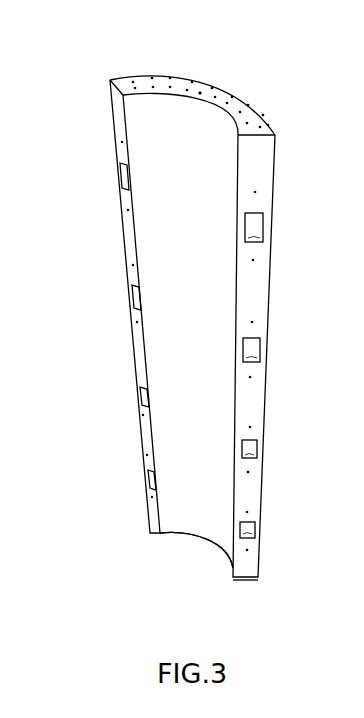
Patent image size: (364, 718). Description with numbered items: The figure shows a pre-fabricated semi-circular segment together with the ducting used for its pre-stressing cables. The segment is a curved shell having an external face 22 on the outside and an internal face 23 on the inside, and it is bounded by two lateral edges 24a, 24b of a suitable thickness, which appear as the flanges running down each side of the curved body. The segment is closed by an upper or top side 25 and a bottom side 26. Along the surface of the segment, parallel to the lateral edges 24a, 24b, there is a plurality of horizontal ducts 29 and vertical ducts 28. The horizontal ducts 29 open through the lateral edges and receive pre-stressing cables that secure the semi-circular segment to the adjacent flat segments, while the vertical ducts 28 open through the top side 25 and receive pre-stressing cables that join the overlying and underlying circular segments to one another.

The external face 22 is at (268, 110).
The internal face 23 is at (167, 128).
The lateral edge 24a is at (250, 272).
The lateral edge 24b is at (130, 227).
The upper or top side 25 is at (178, 82).
The bottom side 26 is at (200, 535).
The vertical ducts 28 is at (200, 92).
The horizontal ducts 29 is at (250, 427).